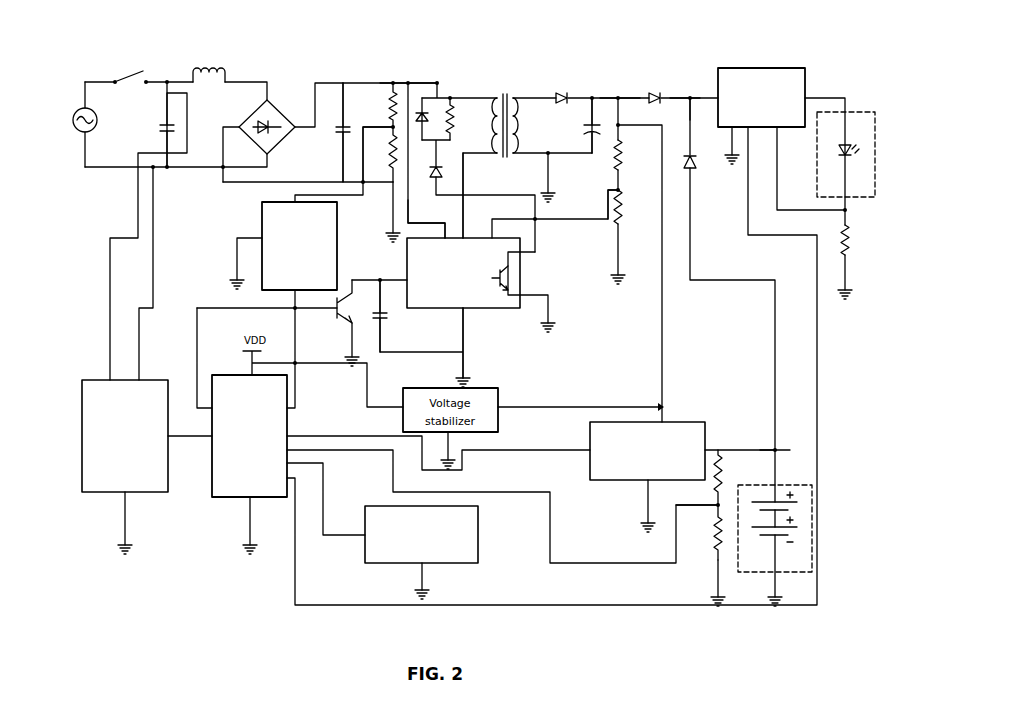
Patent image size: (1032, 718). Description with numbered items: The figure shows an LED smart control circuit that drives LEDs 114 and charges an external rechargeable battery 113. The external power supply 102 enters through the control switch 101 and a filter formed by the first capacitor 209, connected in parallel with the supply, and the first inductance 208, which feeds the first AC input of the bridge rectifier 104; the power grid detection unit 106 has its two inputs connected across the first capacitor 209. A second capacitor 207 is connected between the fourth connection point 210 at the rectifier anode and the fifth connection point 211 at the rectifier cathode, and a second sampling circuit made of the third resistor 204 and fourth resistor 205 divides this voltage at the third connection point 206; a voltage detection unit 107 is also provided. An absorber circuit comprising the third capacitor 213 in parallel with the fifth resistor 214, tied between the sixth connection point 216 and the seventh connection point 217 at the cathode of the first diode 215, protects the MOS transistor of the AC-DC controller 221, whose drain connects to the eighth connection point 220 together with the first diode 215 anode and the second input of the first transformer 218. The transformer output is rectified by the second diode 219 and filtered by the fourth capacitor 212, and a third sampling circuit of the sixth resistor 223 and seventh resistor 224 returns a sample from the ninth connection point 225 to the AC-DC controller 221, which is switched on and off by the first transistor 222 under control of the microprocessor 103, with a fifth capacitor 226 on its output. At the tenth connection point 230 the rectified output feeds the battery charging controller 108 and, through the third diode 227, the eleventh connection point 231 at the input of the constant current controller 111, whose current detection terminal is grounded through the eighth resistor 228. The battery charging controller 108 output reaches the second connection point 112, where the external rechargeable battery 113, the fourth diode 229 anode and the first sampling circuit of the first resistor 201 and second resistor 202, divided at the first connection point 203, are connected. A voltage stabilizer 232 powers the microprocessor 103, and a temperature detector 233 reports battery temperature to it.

The control switch 101 is at (130, 70).
The external power supply 102 is at (80, 108).
The microprocessor 103 is at (233, 498).
The bridge rectifier 104 is at (282, 110).
The power grid detection unit 106 is at (93, 378).
The voltage detection unit 107 is at (262, 225).
The battery charging controller 108 is at (678, 422).
The constant current controller 111 is at (750, 68).
The second connection point 112 is at (778, 448).
The external rechargeable battery 113 is at (812, 493).
The LEDs 114 is at (863, 110).
The first resistor 201 is at (722, 470).
The second resistor 202 is at (710, 555).
The first connection point 203 is at (700, 512).
The third resistor 204 is at (392, 97).
The fourth resistor 205 is at (390, 185).
The third connection point 206 is at (385, 115).
The second capacitor 207 is at (328, 132).
The first inductance 208 is at (213, 67).
The first capacitor 209 is at (163, 122).
The fourth connection point 210 is at (395, 82).
The fifth connection point 211 is at (393, 200).
The fourth capacitor 212 is at (590, 138).
The third capacitor 213 is at (420, 98).
The fifth resistor 214 is at (452, 98).
The first diode 215 is at (436, 188).
The sixth connection point 216 is at (424, 96).
The seventh connection point 217 is at (440, 170).
The first transformer 218 is at (503, 98).
The second diode 219 is at (563, 95).
The eighth connection point 220 is at (463, 200).
The AC-DC controller 221 is at (493, 312).
The first transistor 222 is at (340, 300).
The sixth resistor 223 is at (623, 152).
The seventh resistor 224 is at (621, 216).
The ninth connection point 225 is at (622, 193).
The fifth capacitor 226 is at (386, 320).
The third diode 227 is at (657, 96).
The eighth resistor 228 is at (850, 240).
The fourth diode 229 is at (692, 172).
The tenth connection point 230 is at (619, 96).
The eleventh connection point 231 is at (691, 97).
The voltage stabilizer 232 is at (477, 380).
The temperature detector 233 is at (382, 566).